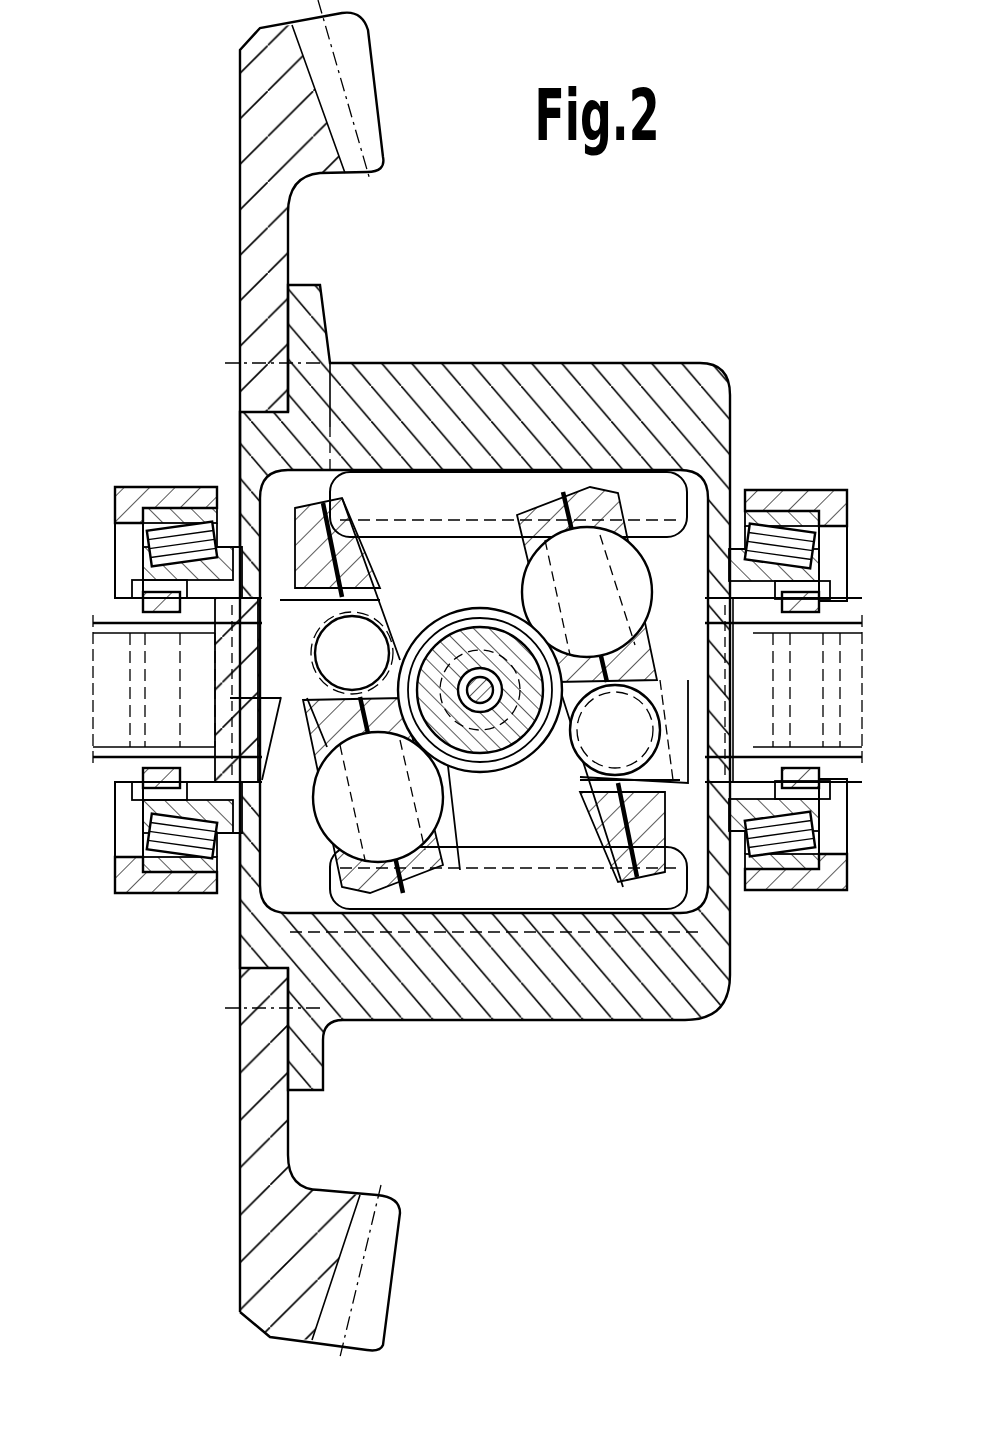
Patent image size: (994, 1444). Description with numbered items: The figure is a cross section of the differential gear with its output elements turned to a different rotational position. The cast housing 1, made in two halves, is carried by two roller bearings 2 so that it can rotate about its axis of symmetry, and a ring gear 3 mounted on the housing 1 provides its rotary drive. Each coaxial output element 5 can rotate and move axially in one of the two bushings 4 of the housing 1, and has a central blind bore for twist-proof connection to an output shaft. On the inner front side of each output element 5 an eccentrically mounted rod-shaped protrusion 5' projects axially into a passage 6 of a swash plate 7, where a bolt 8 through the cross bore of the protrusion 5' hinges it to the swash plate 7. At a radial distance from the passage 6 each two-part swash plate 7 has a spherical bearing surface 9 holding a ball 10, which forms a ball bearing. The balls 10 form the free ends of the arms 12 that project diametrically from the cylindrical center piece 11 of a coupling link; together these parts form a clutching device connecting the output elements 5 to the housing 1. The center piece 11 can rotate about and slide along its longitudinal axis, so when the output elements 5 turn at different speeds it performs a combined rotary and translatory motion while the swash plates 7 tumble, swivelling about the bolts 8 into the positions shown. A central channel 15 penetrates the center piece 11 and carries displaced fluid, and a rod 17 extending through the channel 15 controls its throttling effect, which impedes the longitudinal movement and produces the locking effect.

The housing 1 is at (612, 393).
The roller bearings 2 is at (150, 530).
The ring gear 3 is at (272, 118).
The bushings 4 is at (185, 598).
The output element 5 is at (472, 688).
The rod-shaped protrusion 5' is at (476, 664).
The passage 6 is at (337, 712).
The swash plate 7 is at (352, 568).
The bolt 8 is at (342, 669).
The spherical bearing surface 9 is at (590, 523).
The ball 10 is at (570, 608).
The cylindrical center piece 11 is at (487, 768).
The arm 12 is at (510, 600).
The central channel 15 is at (448, 665).
The rod 17 is at (478, 672).